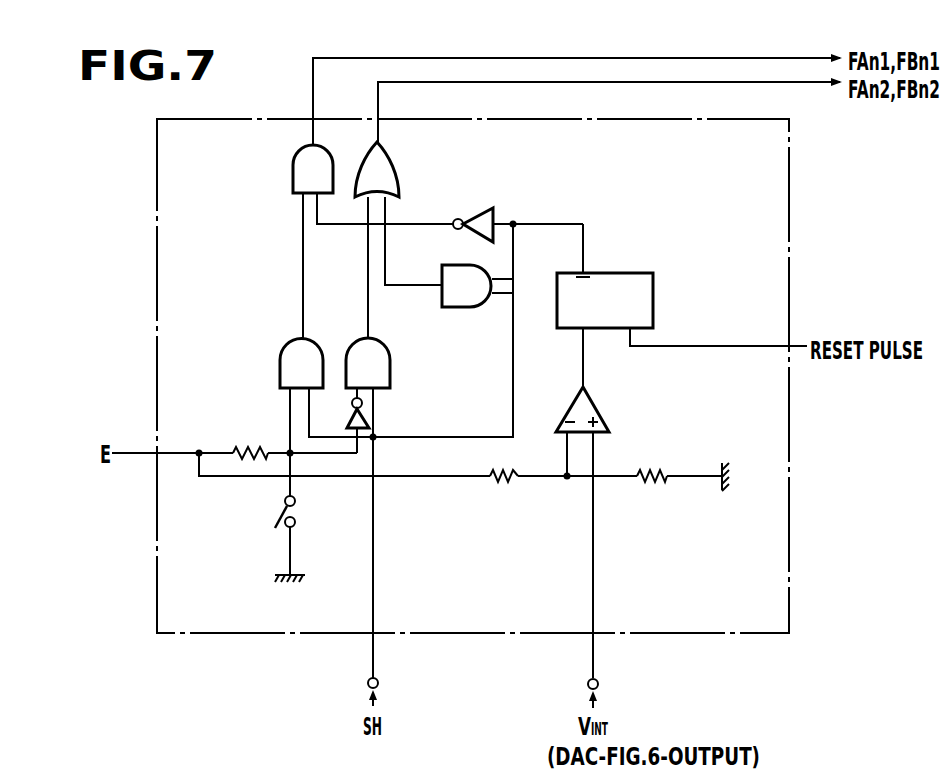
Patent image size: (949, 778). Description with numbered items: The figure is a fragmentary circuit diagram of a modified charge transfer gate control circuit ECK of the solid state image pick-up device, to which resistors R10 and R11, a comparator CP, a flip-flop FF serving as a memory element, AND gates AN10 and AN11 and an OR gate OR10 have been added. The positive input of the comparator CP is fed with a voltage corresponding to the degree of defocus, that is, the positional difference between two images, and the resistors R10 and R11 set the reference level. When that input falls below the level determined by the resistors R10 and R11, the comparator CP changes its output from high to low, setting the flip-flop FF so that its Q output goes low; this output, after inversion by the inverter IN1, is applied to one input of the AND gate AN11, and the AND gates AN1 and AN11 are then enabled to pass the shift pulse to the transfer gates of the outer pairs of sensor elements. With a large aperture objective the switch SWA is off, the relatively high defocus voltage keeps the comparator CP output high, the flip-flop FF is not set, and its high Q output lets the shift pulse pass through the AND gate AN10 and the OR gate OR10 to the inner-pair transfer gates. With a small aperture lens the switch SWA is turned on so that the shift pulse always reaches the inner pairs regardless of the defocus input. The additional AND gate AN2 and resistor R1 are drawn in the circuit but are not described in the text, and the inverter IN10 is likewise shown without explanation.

The charge transfer gate control circuit ECK is at (650, 634).
The AND gate AN11 is at (292, 178).
The OR gate OR10 is at (399, 177).
The inverter IN10 is at (484, 212).
The AND gate AN10 is at (470, 298).
The flip-flop FF is at (624, 272).
The comparator CP is at (593, 409).
The AND gate AN1 is at (301, 364).
The AND gate AN2 is at (368, 363).
The inverter IN1 is at (366, 418).
The resistor R1 is at (250, 440).
The resistor R10 is at (506, 491).
The resistor R11 is at (653, 491).
The switch SWA is at (303, 512).